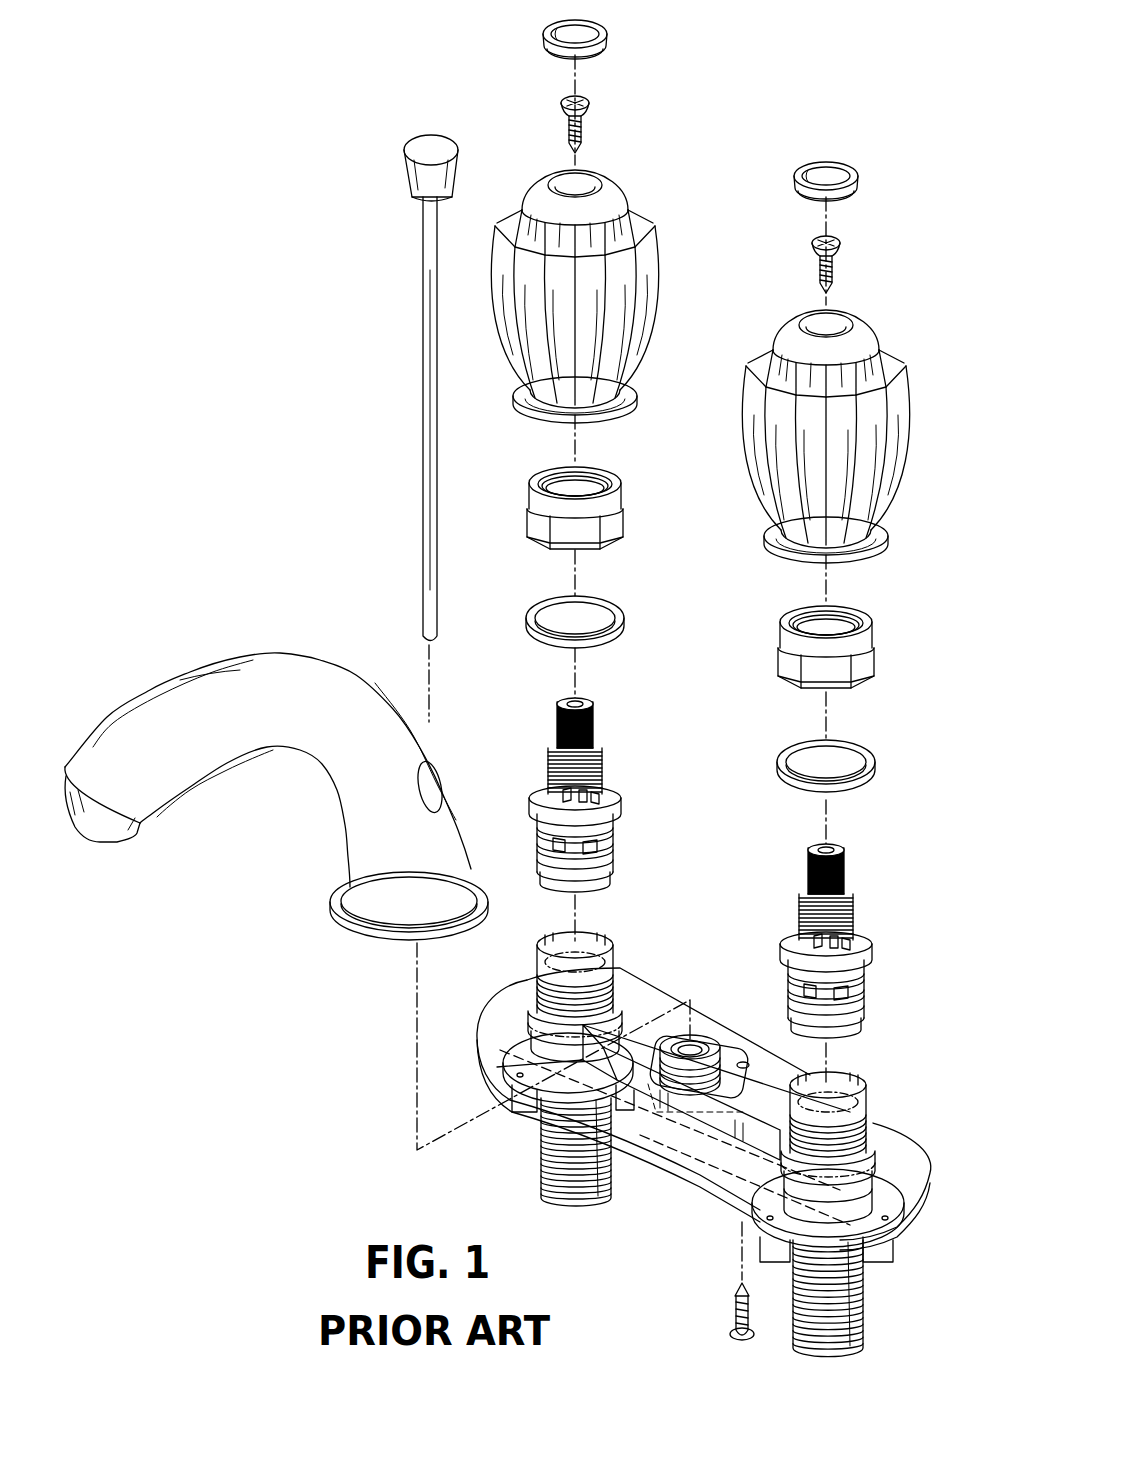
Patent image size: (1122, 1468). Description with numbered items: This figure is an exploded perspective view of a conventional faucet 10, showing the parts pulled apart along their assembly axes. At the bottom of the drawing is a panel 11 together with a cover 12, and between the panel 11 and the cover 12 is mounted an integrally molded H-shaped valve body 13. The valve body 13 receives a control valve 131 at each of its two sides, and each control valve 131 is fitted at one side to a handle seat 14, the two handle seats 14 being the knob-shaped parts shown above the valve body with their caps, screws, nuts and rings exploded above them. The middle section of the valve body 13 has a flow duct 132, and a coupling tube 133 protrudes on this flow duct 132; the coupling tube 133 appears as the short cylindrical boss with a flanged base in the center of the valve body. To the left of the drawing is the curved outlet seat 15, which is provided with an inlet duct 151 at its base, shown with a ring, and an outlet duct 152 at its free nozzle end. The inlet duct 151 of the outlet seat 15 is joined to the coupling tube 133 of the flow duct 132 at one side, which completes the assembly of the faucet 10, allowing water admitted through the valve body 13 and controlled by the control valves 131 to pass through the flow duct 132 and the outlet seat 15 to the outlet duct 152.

The faucet 10 is at (317, 417).
The panel 11 is at (704, 1128).
The cover 12 is at (665, 1165).
The H-shaped valve body 13 is at (673, 1122).
The control valve 131 is at (612, 805).
The flow duct 132 is at (650, 1112).
The coupling tube 133 is at (707, 1033).
The handle seat 14 is at (663, 245).
The outlet seat 15 is at (268, 797).
The inlet duct 151 is at (376, 942).
The outlet duct 152 is at (86, 843).